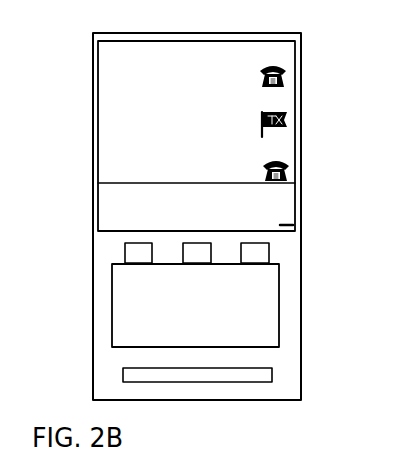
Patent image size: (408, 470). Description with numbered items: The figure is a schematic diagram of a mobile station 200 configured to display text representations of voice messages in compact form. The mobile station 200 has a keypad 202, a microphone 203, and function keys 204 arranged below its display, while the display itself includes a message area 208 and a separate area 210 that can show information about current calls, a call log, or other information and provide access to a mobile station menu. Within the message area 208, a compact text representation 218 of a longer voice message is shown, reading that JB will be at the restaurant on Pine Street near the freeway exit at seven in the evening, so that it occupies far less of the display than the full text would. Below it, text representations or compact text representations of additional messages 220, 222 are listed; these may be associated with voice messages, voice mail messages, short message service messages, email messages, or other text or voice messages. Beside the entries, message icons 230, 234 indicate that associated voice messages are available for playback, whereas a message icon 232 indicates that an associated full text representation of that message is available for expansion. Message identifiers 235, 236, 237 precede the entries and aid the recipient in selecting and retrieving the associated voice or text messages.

The mobile station 200 is at (162, 420).
The keypad 202 is at (279, 325).
The microphone 203 is at (272, 375).
The function keys 204 is at (287, 253).
The message area 208 is at (300, 89).
The area 210 is at (297, 231).
The compact text representation 218 is at (129, 48).
The additional message 220 is at (99, 100).
The additional message 222 is at (167, 163).
The message icon 230 is at (286, 73).
The message icon 232 is at (287, 125).
The message icon 234 is at (288, 169).
The message identifier 235 is at (98, 53).
The message identifier 236 is at (100, 118).
The message identifier 237 is at (100, 165).